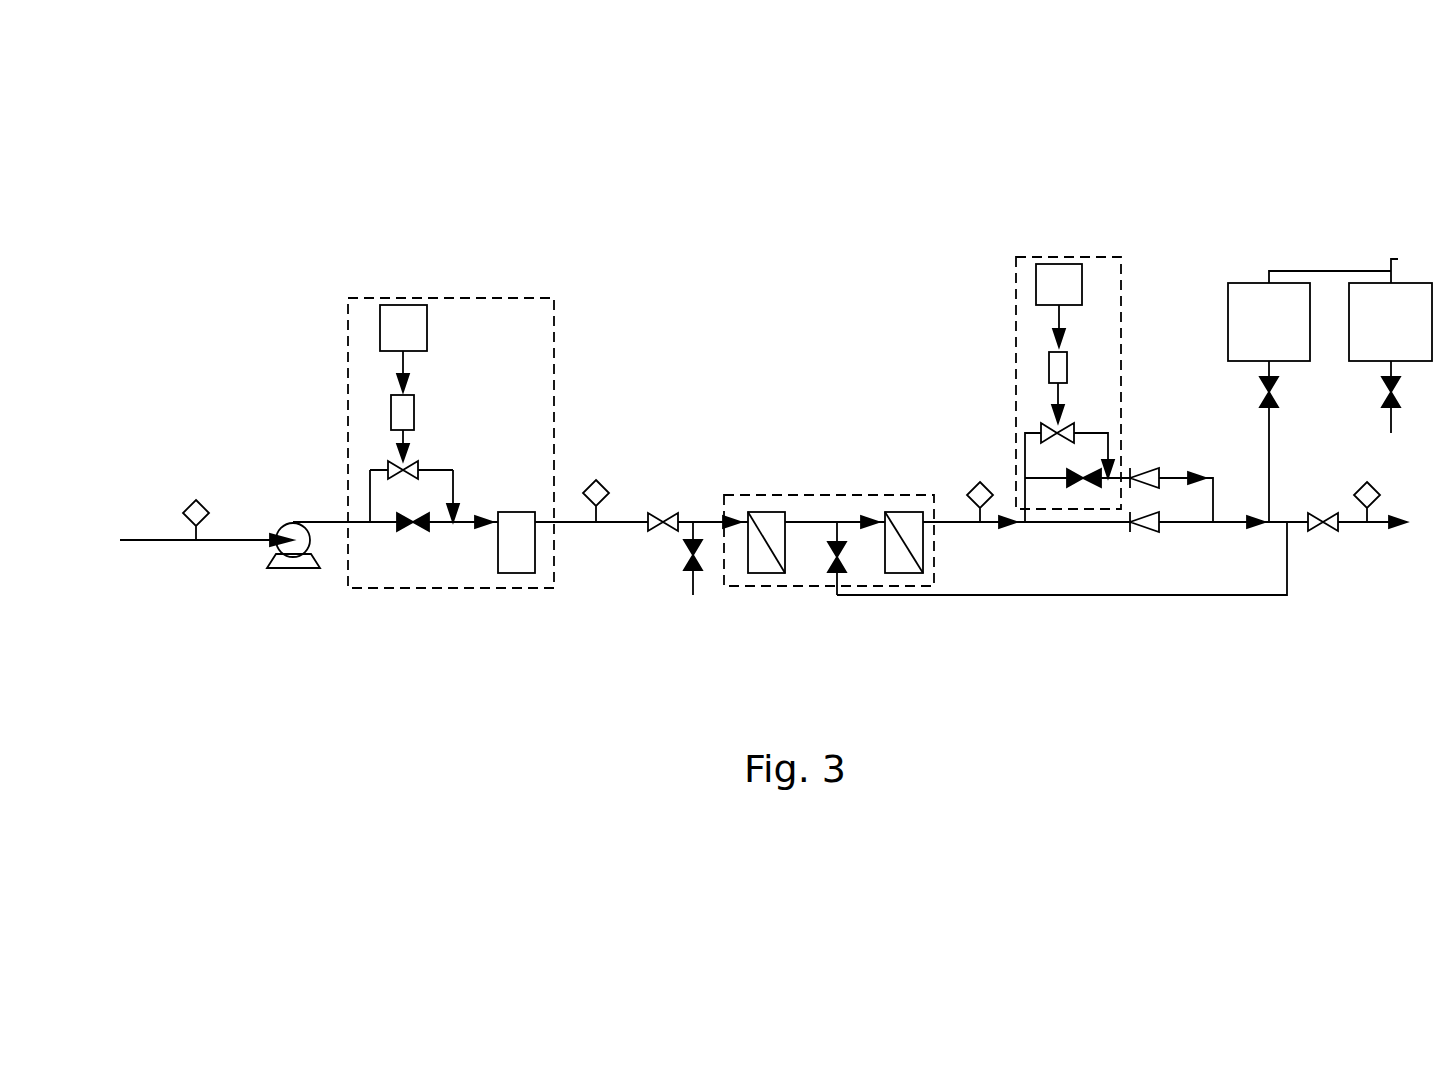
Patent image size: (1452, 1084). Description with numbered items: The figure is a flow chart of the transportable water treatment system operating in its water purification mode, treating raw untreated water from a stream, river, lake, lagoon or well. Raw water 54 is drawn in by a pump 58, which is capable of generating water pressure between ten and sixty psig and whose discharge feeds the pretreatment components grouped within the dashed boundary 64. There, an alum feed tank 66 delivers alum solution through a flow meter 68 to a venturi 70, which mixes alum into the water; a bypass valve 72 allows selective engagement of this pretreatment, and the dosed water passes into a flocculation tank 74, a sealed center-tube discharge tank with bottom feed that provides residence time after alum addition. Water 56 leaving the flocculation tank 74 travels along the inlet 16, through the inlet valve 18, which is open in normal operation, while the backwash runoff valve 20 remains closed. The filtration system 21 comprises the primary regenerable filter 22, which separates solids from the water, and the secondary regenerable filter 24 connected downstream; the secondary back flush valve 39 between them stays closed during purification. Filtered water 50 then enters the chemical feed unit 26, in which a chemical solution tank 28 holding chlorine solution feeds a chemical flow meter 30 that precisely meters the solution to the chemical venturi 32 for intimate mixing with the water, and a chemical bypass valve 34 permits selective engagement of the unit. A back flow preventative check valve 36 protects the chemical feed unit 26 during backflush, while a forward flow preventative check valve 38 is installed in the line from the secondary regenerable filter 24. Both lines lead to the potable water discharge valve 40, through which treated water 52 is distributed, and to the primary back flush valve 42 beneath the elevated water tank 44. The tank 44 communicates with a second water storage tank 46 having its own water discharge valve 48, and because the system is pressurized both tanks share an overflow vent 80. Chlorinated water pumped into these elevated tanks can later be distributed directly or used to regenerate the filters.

The inlet 16 is at (620, 522).
The inlet valve 18 is at (657, 532).
The backwash runoff valve 20 is at (697, 575).
The filtration system 21 is at (860, 495).
The primary regenerable filter 22 is at (770, 515).
The secondary regenerable filter 24 is at (905, 565).
The chemical feed unit 26 is at (1016, 293).
The chemical solution tank 28 is at (1075, 268).
The chemical flow meter 30 is at (1055, 372).
The chemical venturi 32 is at (1062, 432).
The chemical bypass valve 34 is at (1070, 477).
The back flow preventative check valve 36 is at (1135, 472).
The forward flow preventative check valve 38 is at (1135, 530).
The secondary back flush valve 39 is at (824, 558).
The potable water discharge valve 40 is at (1323, 510).
The primary back flush valve 42 is at (1272, 410).
The elevated water tank 44 is at (1269, 322).
The second water storage tank 46 is at (1390, 322).
The water discharge valve 48 is at (1393, 408).
The water 50 is at (974, 487).
The treated water 52 is at (1375, 488).
The water 54 is at (189, 508).
The water 56 is at (590, 490).
The pump 58 is at (293, 560).
The pressure regulating assembly 64 is at (556, 318).
The alum feed tank 66 is at (420, 322).
The flow meter 68 is at (410, 405).
The venturi 70 is at (410, 462).
The bypass valve 72 is at (413, 536).
The flocculation tank 74 is at (507, 515).
The overflow vent 80 is at (1318, 271).